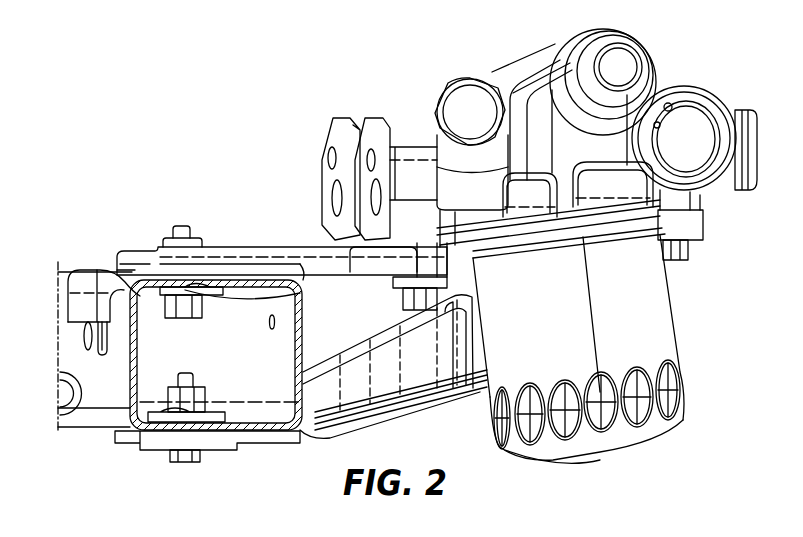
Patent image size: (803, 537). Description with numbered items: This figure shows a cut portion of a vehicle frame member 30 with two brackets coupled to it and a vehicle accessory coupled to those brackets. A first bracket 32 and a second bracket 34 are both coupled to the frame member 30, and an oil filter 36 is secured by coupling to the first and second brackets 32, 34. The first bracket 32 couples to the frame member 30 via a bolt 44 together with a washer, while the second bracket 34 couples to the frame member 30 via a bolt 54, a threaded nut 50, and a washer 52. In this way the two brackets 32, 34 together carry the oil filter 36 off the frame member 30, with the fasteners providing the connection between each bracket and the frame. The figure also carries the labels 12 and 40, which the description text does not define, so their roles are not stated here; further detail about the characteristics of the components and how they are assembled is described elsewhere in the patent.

The mounting bracket 12 is at (393, 279).
The frame member 30 is at (90, 426).
The first bracket 32 is at (265, 256).
The second bracket 34 is at (338, 352).
The oil filter 36 is at (549, 333).
The clip 40 is at (73, 311).
The bolt 44 is at (185, 312).
The threaded nut 50 is at (172, 400).
The washer 52 is at (228, 445).
The bolt 54 is at (186, 460).